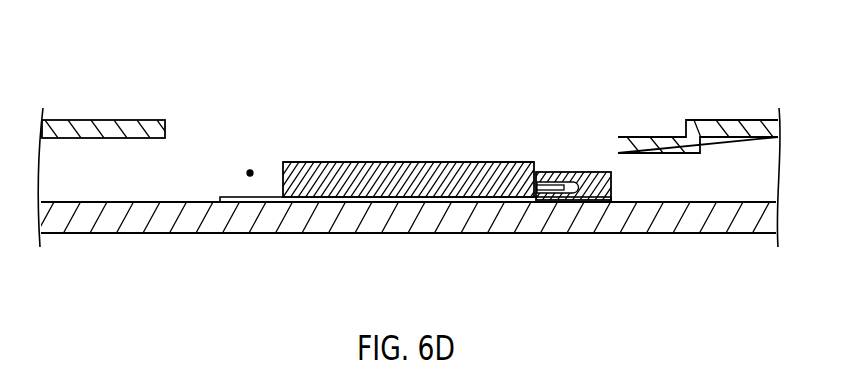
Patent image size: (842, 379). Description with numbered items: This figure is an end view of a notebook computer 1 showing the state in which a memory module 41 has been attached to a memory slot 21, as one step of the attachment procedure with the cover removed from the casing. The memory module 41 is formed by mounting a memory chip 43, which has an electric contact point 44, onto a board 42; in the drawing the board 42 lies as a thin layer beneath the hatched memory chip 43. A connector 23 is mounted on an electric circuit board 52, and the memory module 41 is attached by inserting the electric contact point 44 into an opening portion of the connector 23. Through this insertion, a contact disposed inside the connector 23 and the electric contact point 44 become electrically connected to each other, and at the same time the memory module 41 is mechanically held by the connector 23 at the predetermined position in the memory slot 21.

The display device 1 is at (84, 128).
The memory slot 21 is at (252, 166).
The connector 23 is at (598, 202).
The memory module 41 is at (420, 178).
The board 42 is at (420, 203).
The memory chip 43 is at (468, 178).
The electric contact point 44 is at (558, 200).
The electric circuit board 52 is at (340, 217).